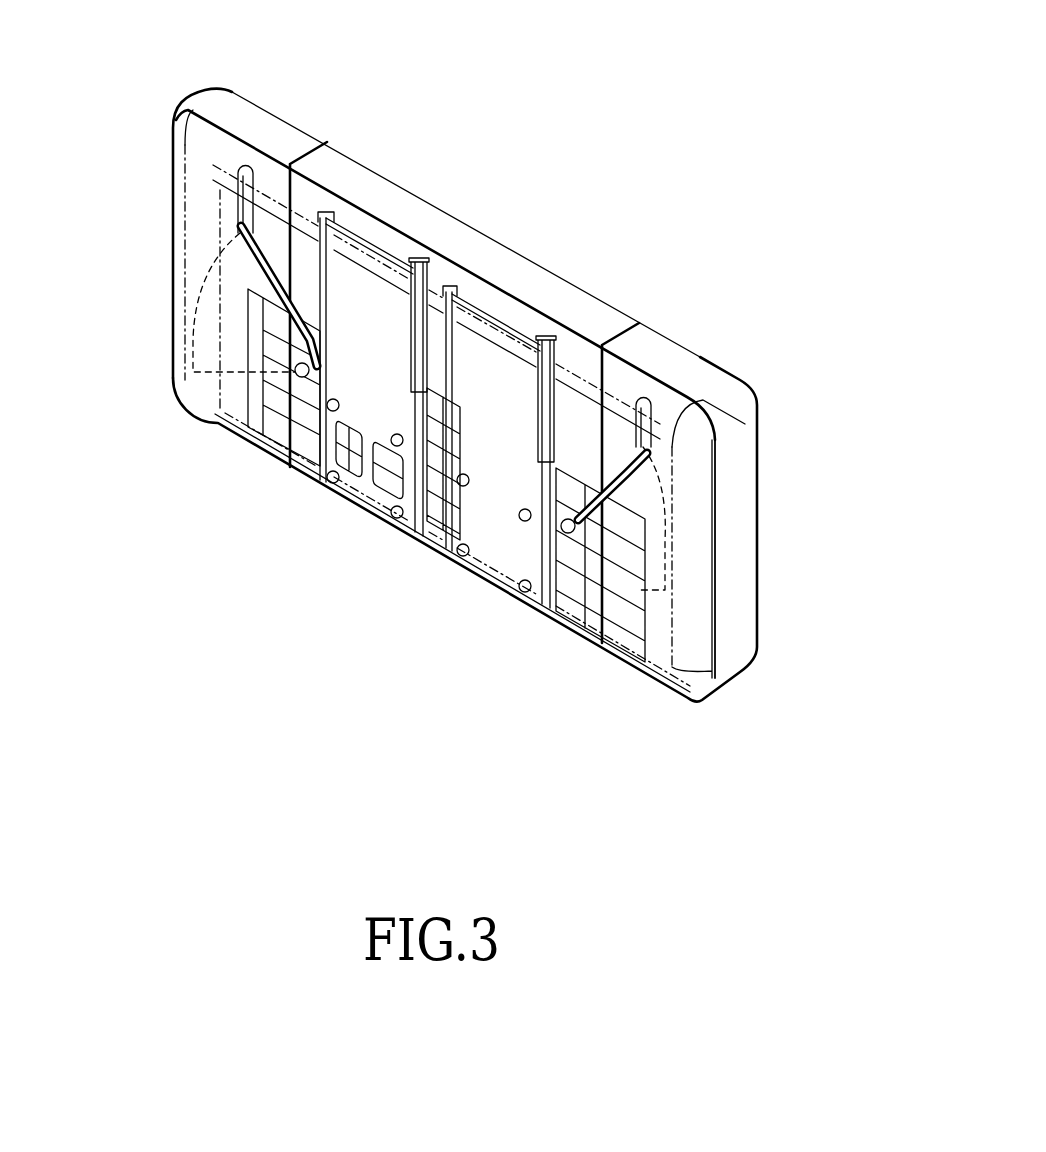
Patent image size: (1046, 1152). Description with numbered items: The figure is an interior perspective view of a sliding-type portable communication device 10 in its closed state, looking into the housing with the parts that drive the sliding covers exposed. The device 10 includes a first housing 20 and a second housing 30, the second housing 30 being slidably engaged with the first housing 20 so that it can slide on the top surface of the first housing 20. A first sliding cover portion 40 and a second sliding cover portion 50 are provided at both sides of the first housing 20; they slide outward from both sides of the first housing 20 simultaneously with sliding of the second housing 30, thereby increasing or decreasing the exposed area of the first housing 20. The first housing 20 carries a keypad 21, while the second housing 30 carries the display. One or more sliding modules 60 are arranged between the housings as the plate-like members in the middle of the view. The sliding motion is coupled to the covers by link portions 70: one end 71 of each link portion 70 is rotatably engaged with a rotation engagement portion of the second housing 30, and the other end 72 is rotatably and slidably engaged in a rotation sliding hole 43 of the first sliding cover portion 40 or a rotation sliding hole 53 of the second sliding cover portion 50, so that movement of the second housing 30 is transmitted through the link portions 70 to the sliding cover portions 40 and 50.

The sliding-type portable communication device 10 is at (655, 106).
The first housing 20 is at (552, 290).
The keypad 21 is at (622, 533).
The second housing 30 is at (673, 617).
The first sliding cover portion 40 is at (272, 123).
The rotation sliding hole 43 is at (243, 167).
The second sliding cover portion 50 is at (733, 402).
The rotation sliding hole 53 is at (643, 398).
The sliding module 60 is at (487, 353).
The link portion 70 is at (578, 536).
The one end of link portion 71 is at (295, 368).
The other end of link portion 72 is at (238, 228).